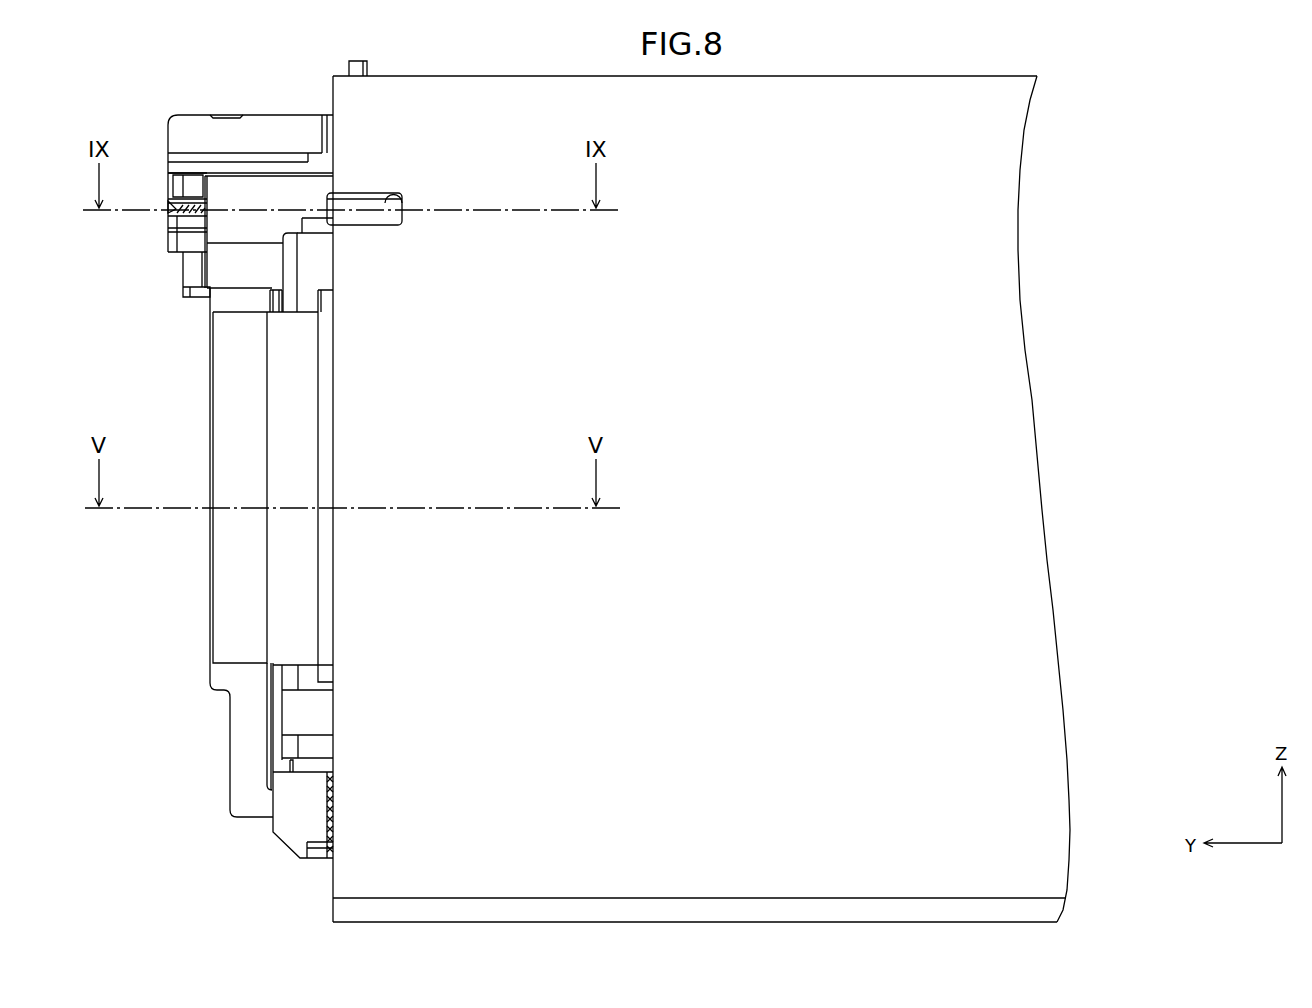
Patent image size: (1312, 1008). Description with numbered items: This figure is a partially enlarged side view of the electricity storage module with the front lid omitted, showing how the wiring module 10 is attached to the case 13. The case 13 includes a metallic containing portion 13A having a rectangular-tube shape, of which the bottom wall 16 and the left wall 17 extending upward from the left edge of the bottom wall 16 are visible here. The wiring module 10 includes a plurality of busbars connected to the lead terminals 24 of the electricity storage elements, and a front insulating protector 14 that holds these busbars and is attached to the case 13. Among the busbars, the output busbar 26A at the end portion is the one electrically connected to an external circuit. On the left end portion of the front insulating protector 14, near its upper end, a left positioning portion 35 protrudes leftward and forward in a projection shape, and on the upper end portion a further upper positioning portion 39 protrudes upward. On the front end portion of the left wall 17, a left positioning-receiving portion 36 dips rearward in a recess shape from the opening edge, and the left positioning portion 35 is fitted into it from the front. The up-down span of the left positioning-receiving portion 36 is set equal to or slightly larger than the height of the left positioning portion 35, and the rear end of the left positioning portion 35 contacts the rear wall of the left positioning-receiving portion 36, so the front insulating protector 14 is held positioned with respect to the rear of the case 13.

The wiring module 10 is at (257, 57).
The containing portion 13A is at (960, 112).
The case 13 is at (730, 58).
The front insulating protector 14 is at (223, 125).
The bottom wall 16 is at (988, 907).
The left wall 17 is at (990, 507).
The lead terminal 24 is at (232, 603).
The output busbar 26A is at (243, 737).
The left positioning portion 35 is at (365, 202).
The left positioning-receiving portion 36 is at (402, 203).
The upper positioning portion 39 is at (366, 64).